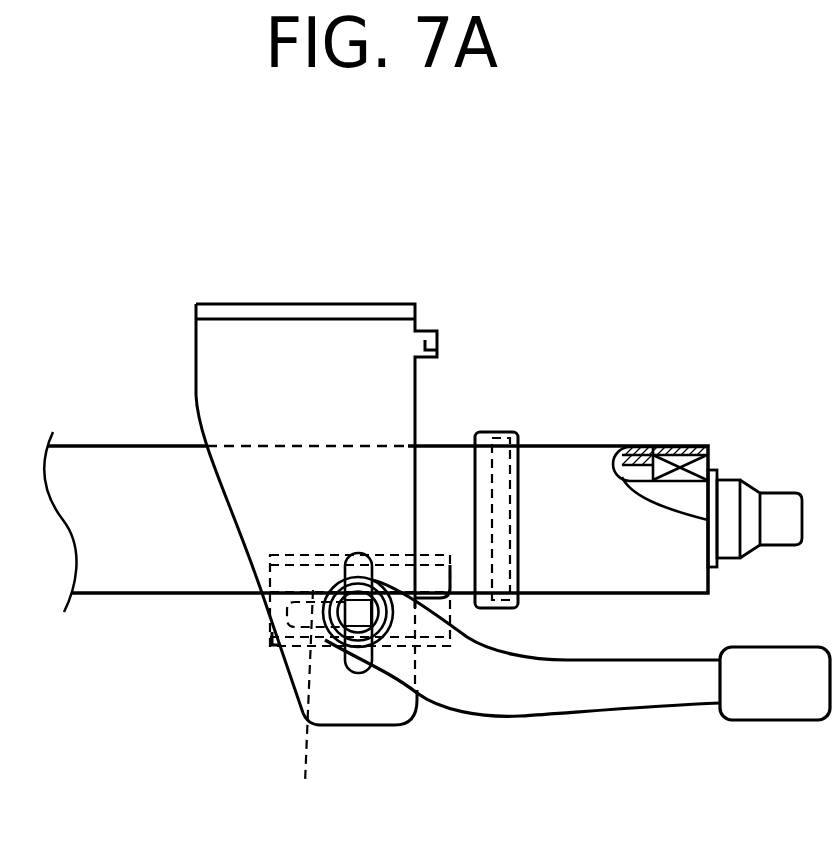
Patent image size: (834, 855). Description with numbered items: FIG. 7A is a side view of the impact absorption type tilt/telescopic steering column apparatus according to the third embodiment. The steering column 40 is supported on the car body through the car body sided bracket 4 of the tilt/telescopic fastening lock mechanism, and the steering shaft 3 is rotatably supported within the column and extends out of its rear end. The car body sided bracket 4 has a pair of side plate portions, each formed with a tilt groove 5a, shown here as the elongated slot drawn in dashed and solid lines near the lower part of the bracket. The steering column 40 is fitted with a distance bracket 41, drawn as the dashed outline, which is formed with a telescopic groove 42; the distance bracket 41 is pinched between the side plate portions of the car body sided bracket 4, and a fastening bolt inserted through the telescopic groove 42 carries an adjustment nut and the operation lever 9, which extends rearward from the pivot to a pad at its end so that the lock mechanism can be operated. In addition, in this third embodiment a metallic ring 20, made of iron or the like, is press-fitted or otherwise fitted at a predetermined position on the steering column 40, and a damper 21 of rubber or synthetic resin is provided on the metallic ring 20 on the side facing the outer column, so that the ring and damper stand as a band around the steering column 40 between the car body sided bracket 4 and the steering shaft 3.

The steering shaft 3 is at (753, 483).
The car body sided bracket 4 is at (242, 303).
The tilt groove 5a is at (367, 667).
The operation lever 9 is at (557, 717).
The metallic ring 20 is at (511, 430).
The damper 21 is at (481, 432).
The steering column 40 is at (600, 445).
The distance bracket 41 is at (272, 643).
The telescopic groove 42 is at (345, 708).